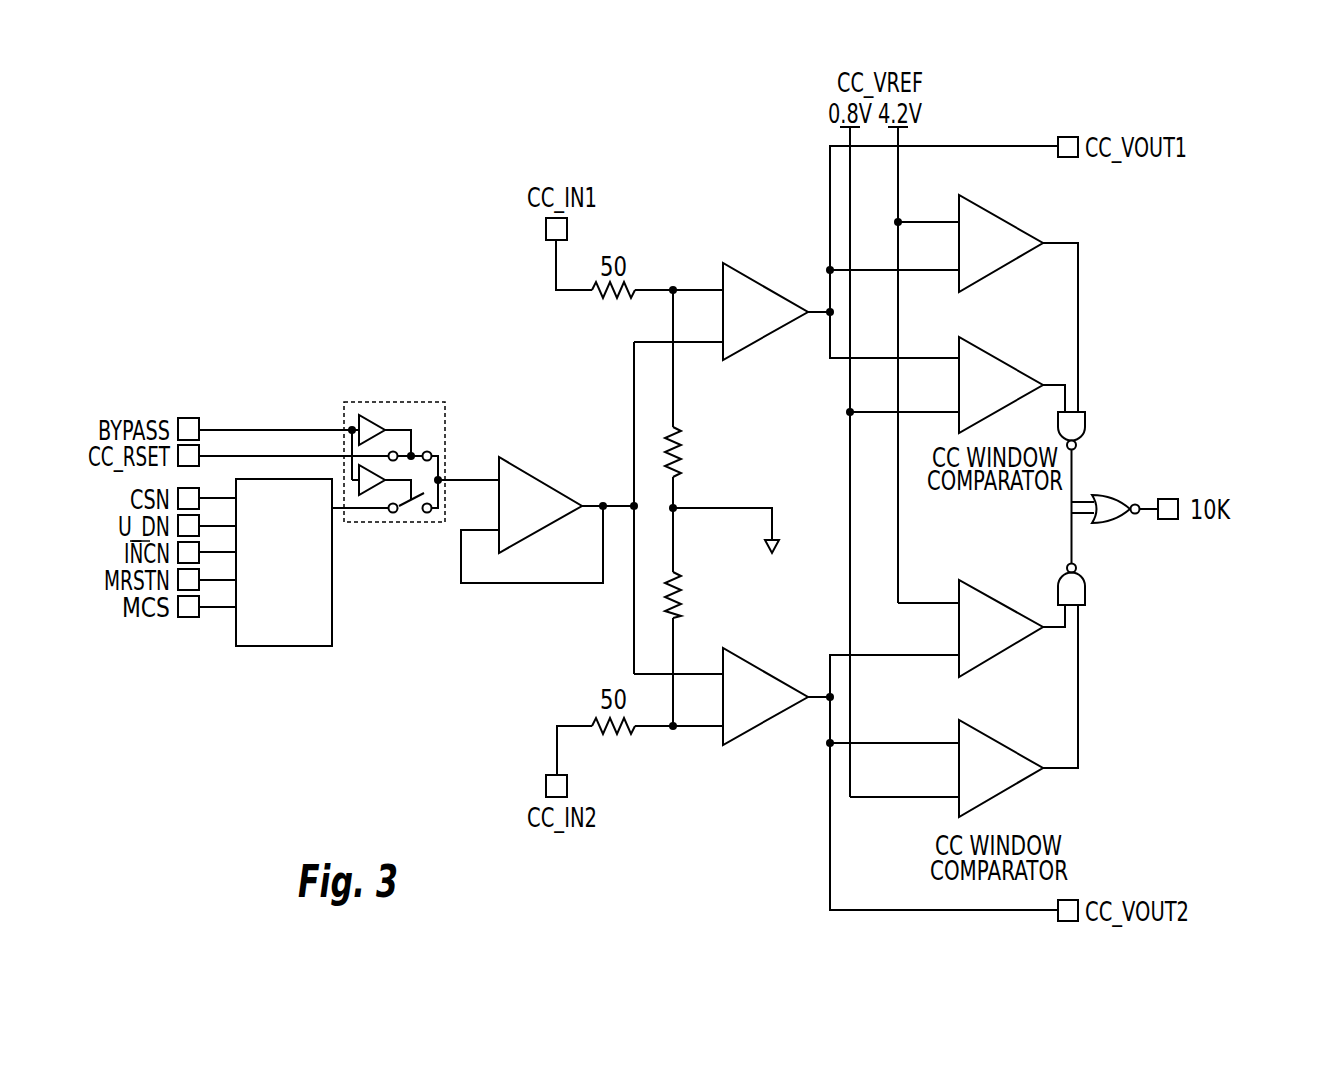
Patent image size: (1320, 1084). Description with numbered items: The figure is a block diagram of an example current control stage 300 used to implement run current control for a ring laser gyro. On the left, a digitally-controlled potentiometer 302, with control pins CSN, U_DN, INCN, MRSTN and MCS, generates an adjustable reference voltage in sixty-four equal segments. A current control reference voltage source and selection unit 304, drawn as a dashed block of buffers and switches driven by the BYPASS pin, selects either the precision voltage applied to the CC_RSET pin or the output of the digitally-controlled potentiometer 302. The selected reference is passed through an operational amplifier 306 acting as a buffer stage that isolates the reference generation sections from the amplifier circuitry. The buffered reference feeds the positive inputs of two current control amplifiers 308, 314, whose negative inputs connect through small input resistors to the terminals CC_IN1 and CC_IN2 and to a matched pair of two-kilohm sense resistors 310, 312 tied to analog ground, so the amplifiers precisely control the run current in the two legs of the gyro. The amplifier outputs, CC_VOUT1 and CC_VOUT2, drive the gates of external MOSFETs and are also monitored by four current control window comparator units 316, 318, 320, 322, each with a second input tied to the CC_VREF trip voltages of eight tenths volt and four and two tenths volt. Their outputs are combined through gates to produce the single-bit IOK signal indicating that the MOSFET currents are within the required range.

The current control stage 300 is at (1234, 229).
The digitally-controlled potentiometer 302 is at (332, 587).
The current control reference voltage source and selection unit 304 is at (408, 402).
The operational amplifier 306 is at (522, 468).
The current control amplifier 308 is at (742, 272).
The sense resistor 310 is at (737, 473).
The sense resistor 312 is at (737, 610).
The current control amplifier 314 is at (722, 735).
The current control window comparator unit 316 is at (990, 210).
The current control window comparator unit 318 is at (990, 353).
The current control window comparator unit 320 is at (990, 593).
The current control window comparator unit 322 is at (990, 735).